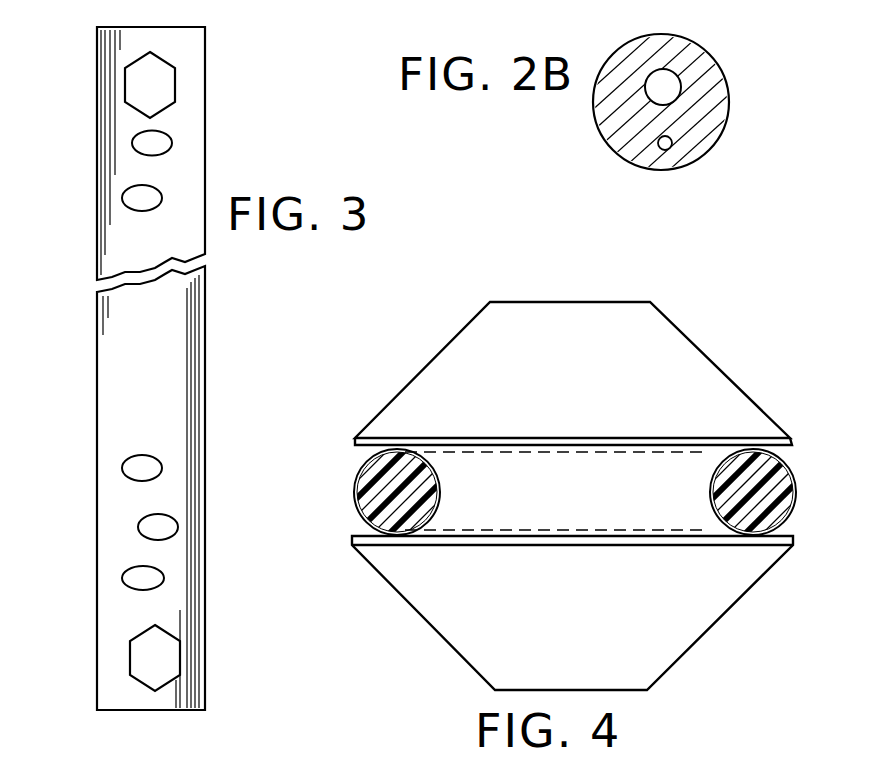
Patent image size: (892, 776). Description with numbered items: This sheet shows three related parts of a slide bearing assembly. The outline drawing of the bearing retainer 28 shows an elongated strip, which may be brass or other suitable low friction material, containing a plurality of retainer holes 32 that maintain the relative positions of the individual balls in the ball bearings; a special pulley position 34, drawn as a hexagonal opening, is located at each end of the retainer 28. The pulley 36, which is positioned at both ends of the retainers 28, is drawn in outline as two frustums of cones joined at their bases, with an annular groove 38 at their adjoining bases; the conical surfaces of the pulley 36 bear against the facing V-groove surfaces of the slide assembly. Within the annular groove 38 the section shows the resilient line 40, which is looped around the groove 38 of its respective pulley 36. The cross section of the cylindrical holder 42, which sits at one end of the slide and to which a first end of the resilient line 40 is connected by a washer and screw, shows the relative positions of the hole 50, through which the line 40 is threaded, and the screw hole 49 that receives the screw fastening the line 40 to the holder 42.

In FIG. 3, the retainer 28 is at (205, 368).
In FIG. 3, the retainer holes 32 is at (162, 192).
In FIG. 3, the pulley positions 34 is at (130, 658).
In FIG. 4, the pulley 36 is at (732, 382).
In FIG. 4, the annular groove 38 is at (777, 535).
In FIG. 4, the resilient line 40 is at (787, 470).
In FIG. 2B, the holder 42 is at (720, 140).
In FIG. 2B, the screw hole 49 is at (677, 73).
In FIG. 2B, the hole 50 is at (668, 150).